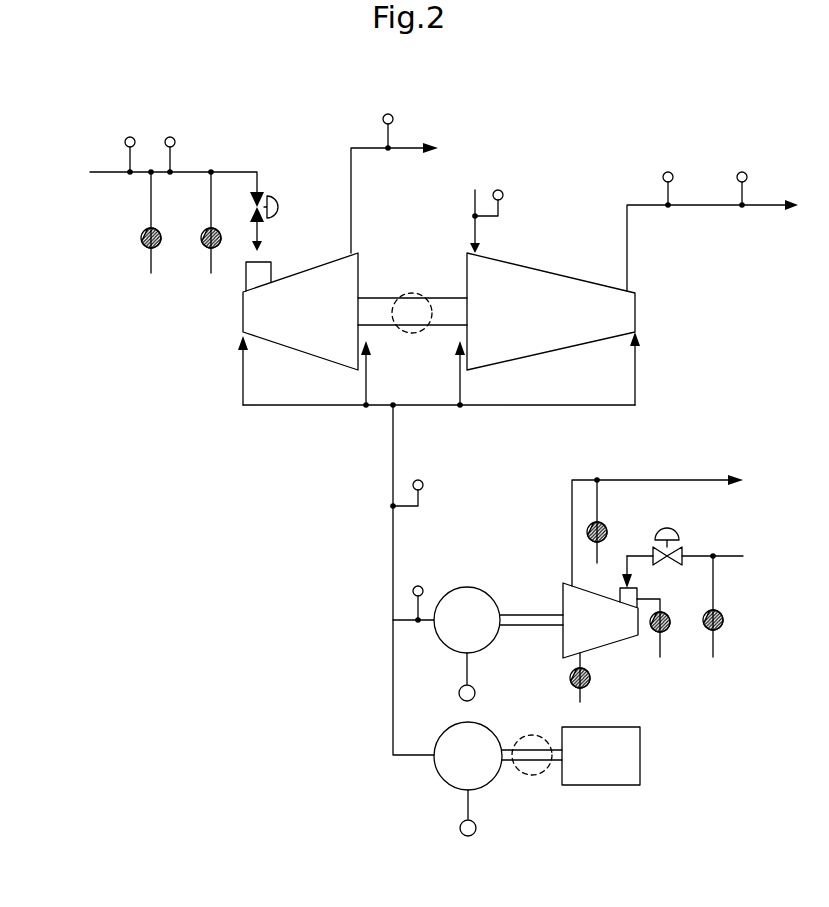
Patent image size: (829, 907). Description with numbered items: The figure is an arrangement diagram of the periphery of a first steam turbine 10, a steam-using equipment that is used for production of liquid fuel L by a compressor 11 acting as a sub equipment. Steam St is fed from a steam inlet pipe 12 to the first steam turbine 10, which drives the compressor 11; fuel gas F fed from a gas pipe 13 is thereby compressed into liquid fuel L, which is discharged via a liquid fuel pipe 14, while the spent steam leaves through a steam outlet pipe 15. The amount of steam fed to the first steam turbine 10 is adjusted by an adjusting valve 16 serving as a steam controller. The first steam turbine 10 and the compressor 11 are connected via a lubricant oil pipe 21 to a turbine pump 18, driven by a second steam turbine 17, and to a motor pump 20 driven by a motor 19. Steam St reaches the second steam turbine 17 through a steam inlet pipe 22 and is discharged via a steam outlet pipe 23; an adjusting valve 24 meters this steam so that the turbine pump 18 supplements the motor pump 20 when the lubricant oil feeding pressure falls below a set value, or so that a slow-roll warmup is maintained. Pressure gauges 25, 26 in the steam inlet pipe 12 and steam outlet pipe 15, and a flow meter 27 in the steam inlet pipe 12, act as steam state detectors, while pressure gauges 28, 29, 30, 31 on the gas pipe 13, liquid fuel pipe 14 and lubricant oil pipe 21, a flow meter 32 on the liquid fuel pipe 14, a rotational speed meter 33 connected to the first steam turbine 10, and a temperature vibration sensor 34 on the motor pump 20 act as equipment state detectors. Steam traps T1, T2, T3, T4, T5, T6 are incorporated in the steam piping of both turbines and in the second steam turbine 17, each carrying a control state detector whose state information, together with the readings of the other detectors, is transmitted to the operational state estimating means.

The first steam turbine 10 is at (322, 358).
The compressor 11 is at (530, 268).
The steam inlet pipe 12 is at (233, 172).
The gas pipe 13 is at (473, 203).
The liquid fuel pipe 14 is at (705, 208).
The steam outlet pipe 15 is at (370, 148).
The adjusting valve 16 is at (287, 207).
The second steam turbine 17 is at (560, 604).
The turbine pump 18 is at (493, 643).
The motor 19 is at (640, 755).
The motor pump 20 is at (443, 780).
The lubricant oil pipe 21 is at (391, 682).
The steam inlet pipe 22 is at (727, 557).
The steam outlet pipe 23 is at (658, 480).
The adjusting valve 24 is at (666, 527).
The pressure gauge 25 is at (170, 137).
The pressure gauge 26 is at (388, 114).
The flow meter 27 is at (130, 137).
The pressure gauge 28 is at (530, 172).
The pressure gauge 29 is at (668, 171).
The pressure gauge 30 is at (423, 483).
The pressure gauge 31 is at (423, 588).
The flow meter 32 is at (742, 171).
The rotational speed meter 33 is at (412, 293).
The temperature vibration sensor 34 is at (532, 775).
The steam trap T1 is at (141, 235).
The steam trap T2 is at (201, 242).
The steam trap T3 is at (723, 620).
The steam trap T4 is at (670, 626).
The steam trap T5 is at (590, 682).
The steam trap T6 is at (587, 532).